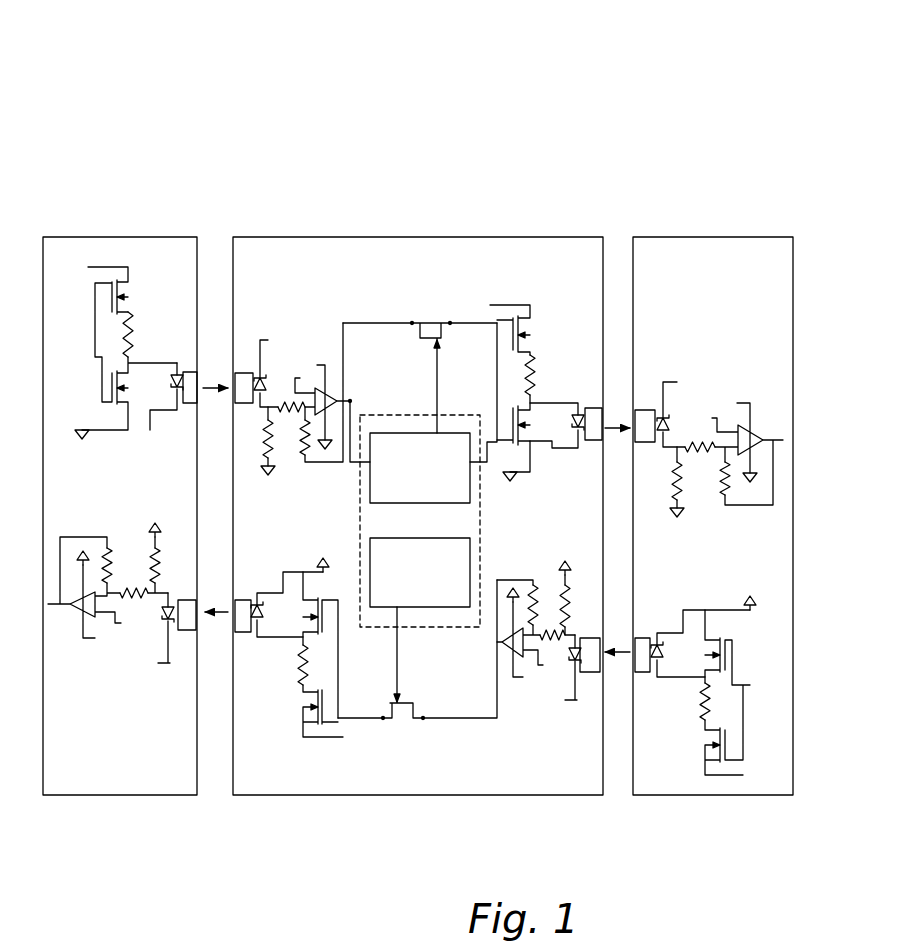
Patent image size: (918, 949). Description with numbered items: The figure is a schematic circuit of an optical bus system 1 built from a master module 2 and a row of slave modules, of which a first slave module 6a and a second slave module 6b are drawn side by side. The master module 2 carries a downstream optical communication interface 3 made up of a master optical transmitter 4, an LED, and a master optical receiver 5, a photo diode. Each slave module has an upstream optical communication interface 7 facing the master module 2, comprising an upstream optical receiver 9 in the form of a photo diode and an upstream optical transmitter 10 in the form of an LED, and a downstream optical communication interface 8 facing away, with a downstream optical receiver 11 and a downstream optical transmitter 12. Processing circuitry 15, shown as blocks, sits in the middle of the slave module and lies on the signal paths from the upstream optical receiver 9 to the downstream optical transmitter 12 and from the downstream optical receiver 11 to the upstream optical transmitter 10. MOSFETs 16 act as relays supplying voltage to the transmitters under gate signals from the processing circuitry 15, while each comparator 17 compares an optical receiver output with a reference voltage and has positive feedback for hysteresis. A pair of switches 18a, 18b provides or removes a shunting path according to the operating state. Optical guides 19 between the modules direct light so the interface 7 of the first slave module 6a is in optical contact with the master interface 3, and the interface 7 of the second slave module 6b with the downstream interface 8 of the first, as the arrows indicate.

The optical bus system 1 is at (537, 142).
The master module 2 is at (134, 228).
The downstream optical communication interface 3 is at (208, 238).
The master optical transmitter 4 is at (180, 370).
The master optical receiver 5 is at (172, 600).
The first slave module 6a is at (450, 228).
The second slave module 6b is at (705, 228).
The upstream optical communication interface 7 is at (620, 256).
The downstream optical communication interface 8 is at (622, 775).
The upstream optical receiver 9 is at (262, 378).
The upstream optical transmitter 10 is at (248, 633).
The downstream optical receiver 11 is at (575, 662).
The downstream optical transmitter 12 is at (578, 408).
The processing circuitry 15 is at (395, 405).
The MOSFETs 16 is at (137, 297).
The comparator 17 is at (333, 380).
The switch 18a is at (405, 722).
The switch 18b is at (435, 307).
The optical guides 19 is at (190, 405).